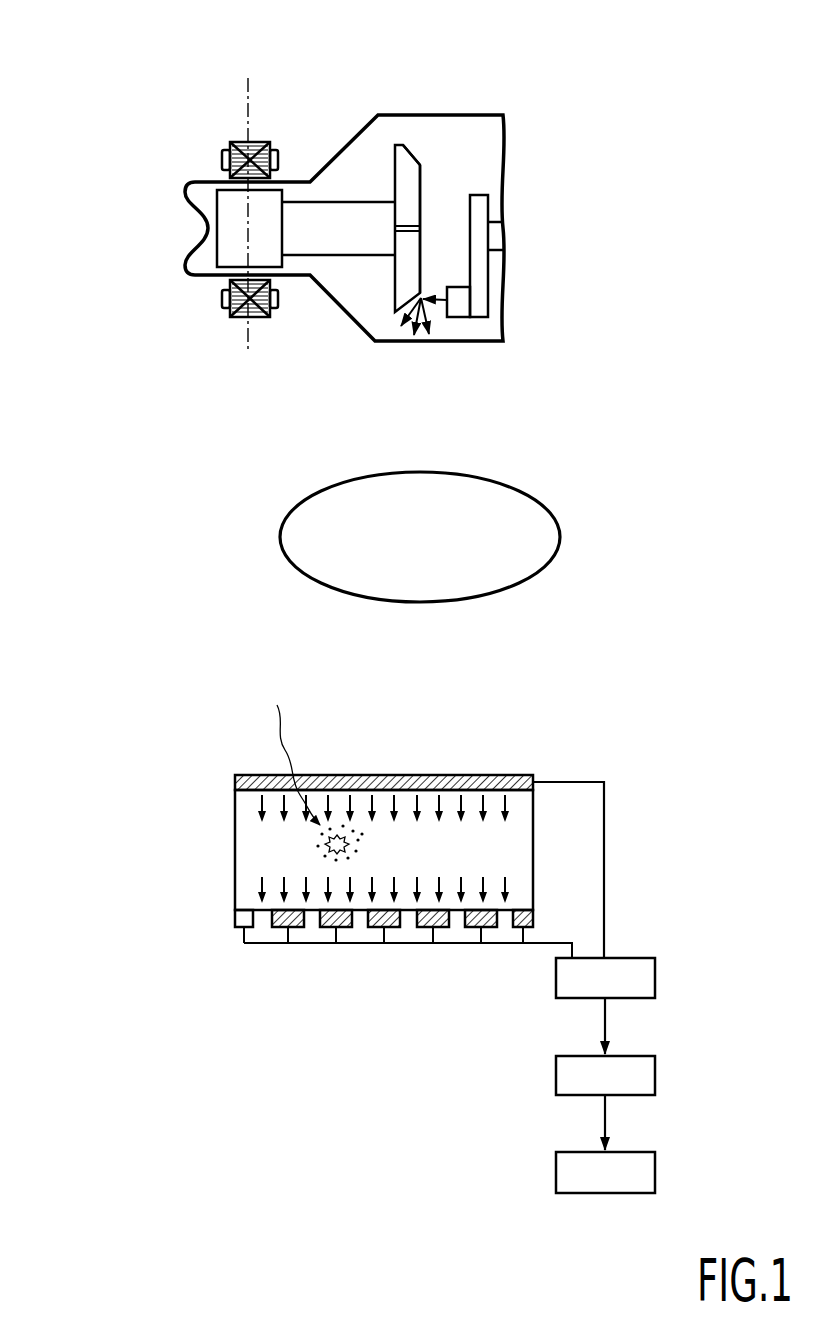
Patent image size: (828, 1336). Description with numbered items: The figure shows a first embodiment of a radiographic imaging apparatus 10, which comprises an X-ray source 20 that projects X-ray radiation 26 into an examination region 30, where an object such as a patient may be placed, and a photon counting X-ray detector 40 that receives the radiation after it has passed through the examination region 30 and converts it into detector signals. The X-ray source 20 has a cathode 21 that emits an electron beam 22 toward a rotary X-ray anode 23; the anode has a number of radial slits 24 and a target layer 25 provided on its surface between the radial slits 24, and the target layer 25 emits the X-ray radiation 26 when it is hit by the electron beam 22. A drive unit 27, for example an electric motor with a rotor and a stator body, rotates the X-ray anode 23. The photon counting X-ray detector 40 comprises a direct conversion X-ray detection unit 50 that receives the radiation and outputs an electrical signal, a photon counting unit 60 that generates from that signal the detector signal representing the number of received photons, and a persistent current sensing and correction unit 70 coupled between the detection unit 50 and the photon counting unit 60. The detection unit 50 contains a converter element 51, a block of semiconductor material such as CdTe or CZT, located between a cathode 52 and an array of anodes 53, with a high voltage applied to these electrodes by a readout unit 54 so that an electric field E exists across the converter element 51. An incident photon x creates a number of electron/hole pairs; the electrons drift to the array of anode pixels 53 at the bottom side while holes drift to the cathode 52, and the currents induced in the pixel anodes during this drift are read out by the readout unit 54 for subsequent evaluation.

The radiographic imaging apparatus 10 is at (637, 89).
The X-ray source 20 is at (125, 205).
The cathode 21 is at (458, 308).
The electron beam 22 is at (437, 303).
The rotary X-ray anode 23 is at (422, 183).
The radial slits 24 is at (405, 225).
The target layer 25 is at (402, 148).
The X-ray radiation 26 is at (398, 328).
The drive unit 27 is at (200, 300).
The examination region 30 is at (280, 540).
The photon counting X-ray detector 40 is at (160, 828).
The direct conversion X-ray detection unit 50 is at (586, 770).
The converter element 51 is at (510, 833).
The cathode 52 is at (393, 783).
The array of anodes 53 is at (545, 916).
The readout unit 54 is at (655, 973).
The photon counting unit 60 is at (655, 1170).
The persistent current sensing and correction unit 70 is at (655, 1070).
The incident photon x is at (293, 751).
The electric field E is at (447, 846).